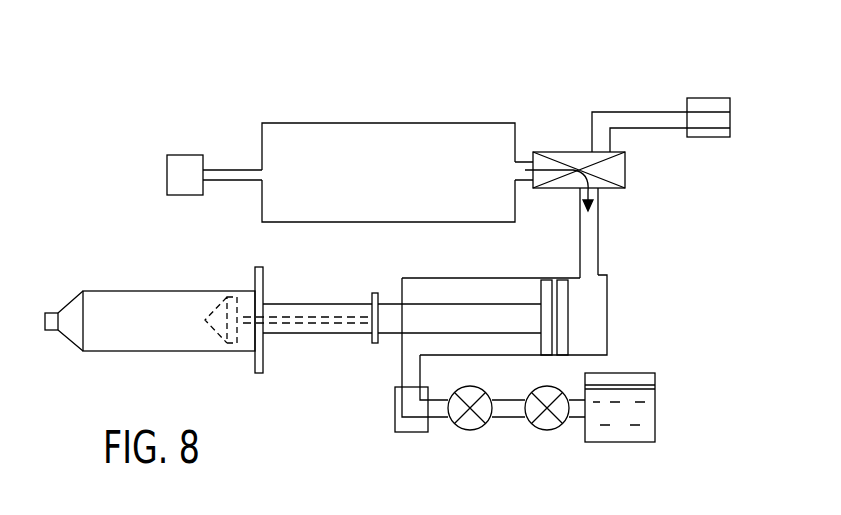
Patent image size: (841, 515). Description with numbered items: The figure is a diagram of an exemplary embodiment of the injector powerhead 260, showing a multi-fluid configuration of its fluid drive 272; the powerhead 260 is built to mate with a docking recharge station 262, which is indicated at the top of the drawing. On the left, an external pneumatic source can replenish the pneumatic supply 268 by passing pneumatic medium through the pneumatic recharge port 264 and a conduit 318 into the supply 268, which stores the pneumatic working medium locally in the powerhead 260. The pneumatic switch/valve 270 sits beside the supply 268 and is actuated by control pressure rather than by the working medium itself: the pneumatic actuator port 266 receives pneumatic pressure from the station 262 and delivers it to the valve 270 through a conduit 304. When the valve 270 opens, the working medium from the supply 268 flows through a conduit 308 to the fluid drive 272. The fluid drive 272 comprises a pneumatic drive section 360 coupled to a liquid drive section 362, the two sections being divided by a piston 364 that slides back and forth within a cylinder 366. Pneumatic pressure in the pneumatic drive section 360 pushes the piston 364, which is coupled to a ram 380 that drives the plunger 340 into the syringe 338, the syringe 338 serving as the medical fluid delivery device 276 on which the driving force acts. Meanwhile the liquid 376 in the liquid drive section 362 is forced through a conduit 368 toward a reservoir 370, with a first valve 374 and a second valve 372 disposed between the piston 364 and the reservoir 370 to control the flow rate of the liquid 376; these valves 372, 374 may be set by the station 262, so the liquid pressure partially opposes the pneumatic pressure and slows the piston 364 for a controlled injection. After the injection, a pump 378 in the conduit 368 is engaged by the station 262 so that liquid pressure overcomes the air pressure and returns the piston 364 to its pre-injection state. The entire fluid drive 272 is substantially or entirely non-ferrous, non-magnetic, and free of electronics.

The injector powerhead 260 is at (664, 27).
The docking recharge station 262 is at (528, 4).
The pneumatic recharge port 264 is at (167, 170).
The conduit 318 is at (238, 168).
The pneumatic supply 268 is at (362, 123).
The pneumatic switch/valve 270 is at (570, 152).
The conduit 304 is at (618, 110).
The pneumatic actuator port 266 is at (712, 98).
The conduit 308 is at (598, 240).
The liquid drive section 362 is at (425, 289).
The liquid 376 is at (500, 278).
The piston 364 is at (555, 278).
The ram 380 is at (391, 250).
The plunger 340 is at (297, 336).
The syringe 338 is at (100, 364).
The medical fluid delivery device 276 is at (67, 285).
The fluid drive 272 is at (674, 306).
The pneumatic drive section 360 is at (636, 341).
The cylinder 366 is at (457, 357).
The conduit 368 is at (401, 365).
The pump 378 is at (415, 432).
The valve 374 is at (476, 431).
The valve 372 is at (549, 431).
The reservoir 370 is at (628, 442).